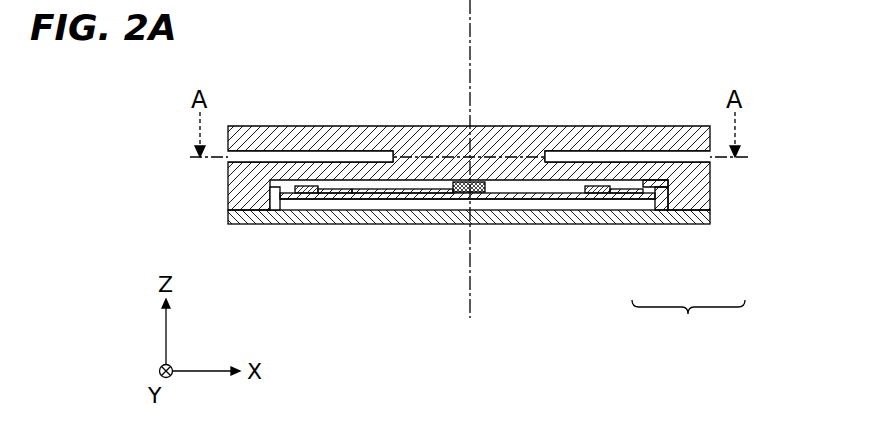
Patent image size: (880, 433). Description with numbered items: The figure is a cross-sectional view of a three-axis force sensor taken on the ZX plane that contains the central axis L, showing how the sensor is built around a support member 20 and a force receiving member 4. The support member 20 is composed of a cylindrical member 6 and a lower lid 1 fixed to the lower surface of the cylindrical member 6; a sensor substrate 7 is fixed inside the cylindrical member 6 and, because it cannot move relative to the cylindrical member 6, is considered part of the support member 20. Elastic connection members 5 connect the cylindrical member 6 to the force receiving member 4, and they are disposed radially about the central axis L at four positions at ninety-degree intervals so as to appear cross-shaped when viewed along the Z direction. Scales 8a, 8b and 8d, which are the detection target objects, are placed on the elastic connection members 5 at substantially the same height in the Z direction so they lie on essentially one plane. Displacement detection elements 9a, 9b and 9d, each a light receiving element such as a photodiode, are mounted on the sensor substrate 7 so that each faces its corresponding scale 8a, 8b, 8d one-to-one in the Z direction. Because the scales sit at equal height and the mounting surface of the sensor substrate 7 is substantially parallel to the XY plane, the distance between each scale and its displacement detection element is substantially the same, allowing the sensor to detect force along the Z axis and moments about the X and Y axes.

The lower lid 1 is at (637, 203).
The force receiving member 4 is at (531, 140).
The elastic connection member 5 is at (307, 168).
The cylindrical member 6 is at (690, 214).
The sensor substrate 7 is at (626, 198).
The scale 8a is at (458, 187).
The scale 8b is at (590, 187).
The scale 8d is at (300, 190).
The displacement detection element 9a is at (479, 189).
The displacement detection element 9b is at (612, 190).
The displacement detection element 9d is at (344, 191).
The support member 20 is at (688, 326).
The central axis L is at (470, 13).